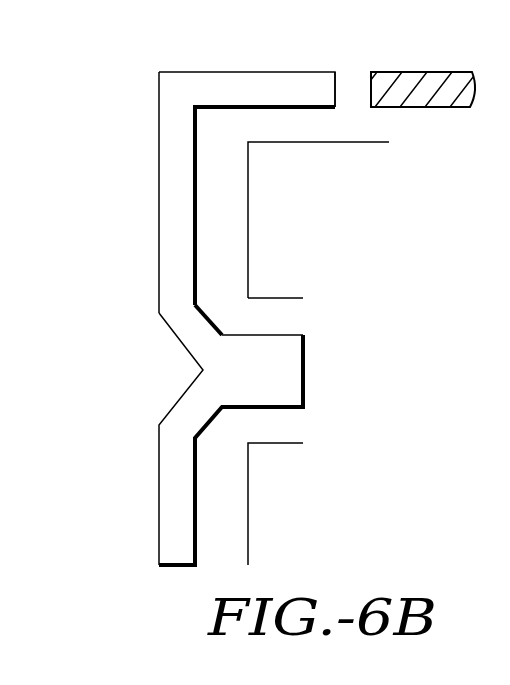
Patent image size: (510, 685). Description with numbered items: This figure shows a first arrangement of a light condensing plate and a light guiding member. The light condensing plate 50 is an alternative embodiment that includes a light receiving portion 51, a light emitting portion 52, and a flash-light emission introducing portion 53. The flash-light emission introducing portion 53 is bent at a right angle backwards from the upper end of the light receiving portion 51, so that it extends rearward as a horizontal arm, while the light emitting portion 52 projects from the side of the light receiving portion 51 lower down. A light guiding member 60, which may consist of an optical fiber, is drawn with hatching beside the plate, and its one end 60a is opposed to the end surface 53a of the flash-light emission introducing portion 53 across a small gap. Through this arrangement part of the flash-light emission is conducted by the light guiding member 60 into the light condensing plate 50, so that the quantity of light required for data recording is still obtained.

The light condensing plate 50 is at (207, 296).
The light receiving portion 51 is at (172, 273).
The light emitting portion 52 is at (287, 375).
The flash-light emission introducing portion 53 is at (277, 82).
The end surface of the flash-light emission introducing portion 53a is at (337, 92).
The light guiding member 60 is at (414, 126).
The one end of the light guiding member 60a is at (368, 92).